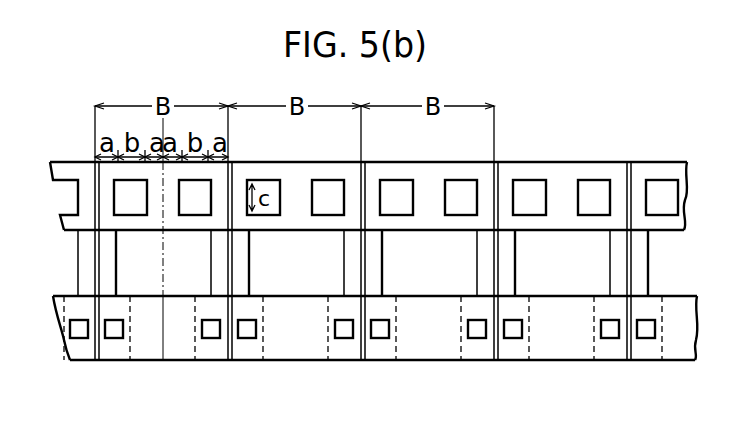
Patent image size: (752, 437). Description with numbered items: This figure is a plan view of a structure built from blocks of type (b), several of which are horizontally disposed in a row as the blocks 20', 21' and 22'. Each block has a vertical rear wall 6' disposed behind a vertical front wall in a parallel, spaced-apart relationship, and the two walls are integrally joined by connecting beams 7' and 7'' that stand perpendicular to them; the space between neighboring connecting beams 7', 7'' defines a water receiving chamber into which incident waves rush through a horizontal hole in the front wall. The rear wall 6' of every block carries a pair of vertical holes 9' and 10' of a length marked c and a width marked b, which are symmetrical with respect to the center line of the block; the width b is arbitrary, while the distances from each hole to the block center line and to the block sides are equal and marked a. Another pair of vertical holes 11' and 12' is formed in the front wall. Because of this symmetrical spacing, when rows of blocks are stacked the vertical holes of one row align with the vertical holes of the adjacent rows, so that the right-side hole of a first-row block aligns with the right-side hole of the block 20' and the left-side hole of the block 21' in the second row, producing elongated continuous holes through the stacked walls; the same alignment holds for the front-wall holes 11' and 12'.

The connecting beam 7' is at (365, 220).
The connecting beam 7'' is at (277, 261).
The vertical hole 9' is at (130, 229).
The vertical hole 10' is at (194, 229).
The vertical rear wall 6' is at (159, 229).
The vertical hole 11' is at (95, 370).
The vertical hole 12' is at (219, 370).
The block 20' is at (151, 358).
The block 21' is at (298, 358).
The block 22' is at (431, 358).